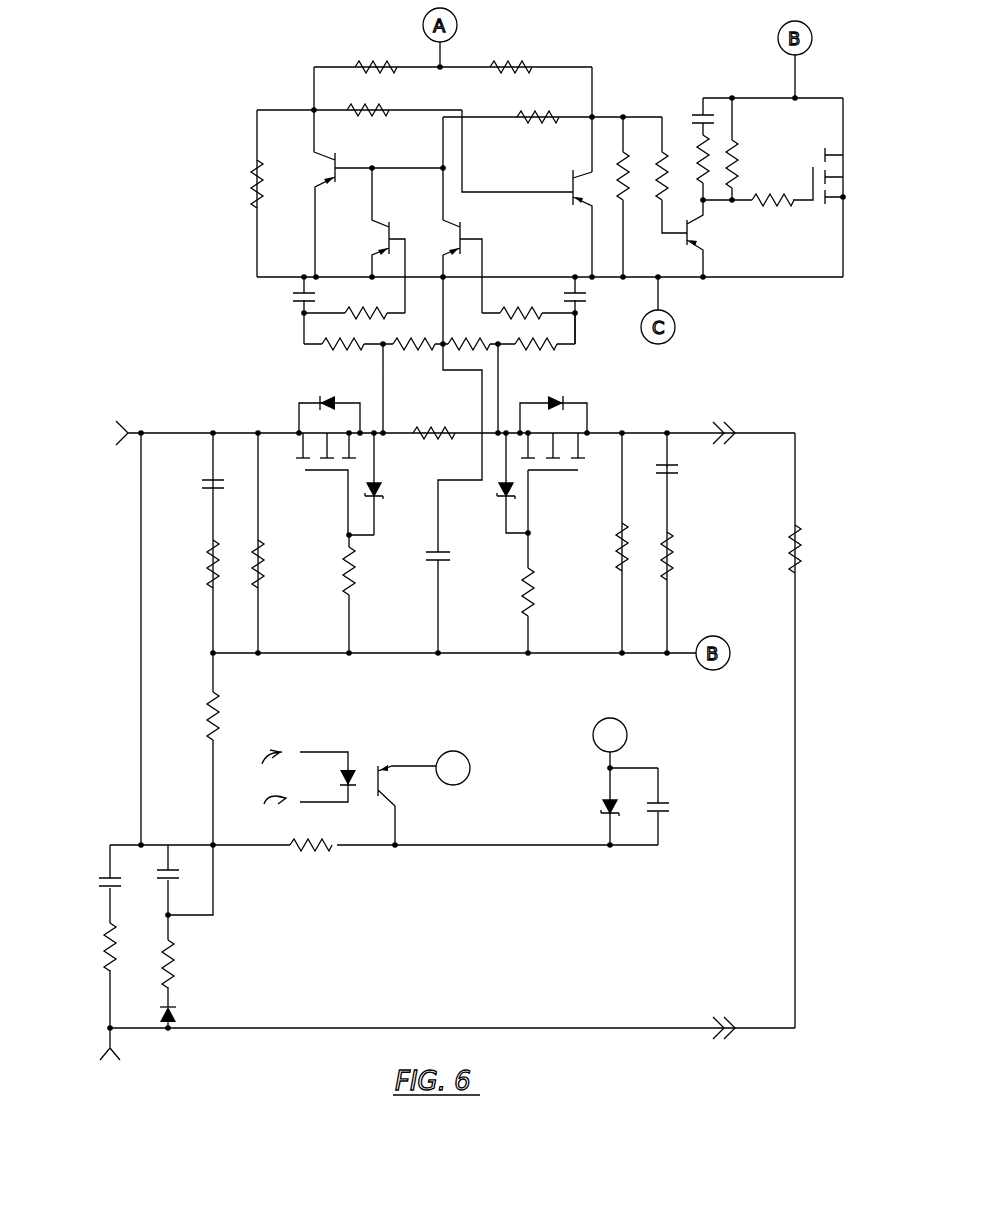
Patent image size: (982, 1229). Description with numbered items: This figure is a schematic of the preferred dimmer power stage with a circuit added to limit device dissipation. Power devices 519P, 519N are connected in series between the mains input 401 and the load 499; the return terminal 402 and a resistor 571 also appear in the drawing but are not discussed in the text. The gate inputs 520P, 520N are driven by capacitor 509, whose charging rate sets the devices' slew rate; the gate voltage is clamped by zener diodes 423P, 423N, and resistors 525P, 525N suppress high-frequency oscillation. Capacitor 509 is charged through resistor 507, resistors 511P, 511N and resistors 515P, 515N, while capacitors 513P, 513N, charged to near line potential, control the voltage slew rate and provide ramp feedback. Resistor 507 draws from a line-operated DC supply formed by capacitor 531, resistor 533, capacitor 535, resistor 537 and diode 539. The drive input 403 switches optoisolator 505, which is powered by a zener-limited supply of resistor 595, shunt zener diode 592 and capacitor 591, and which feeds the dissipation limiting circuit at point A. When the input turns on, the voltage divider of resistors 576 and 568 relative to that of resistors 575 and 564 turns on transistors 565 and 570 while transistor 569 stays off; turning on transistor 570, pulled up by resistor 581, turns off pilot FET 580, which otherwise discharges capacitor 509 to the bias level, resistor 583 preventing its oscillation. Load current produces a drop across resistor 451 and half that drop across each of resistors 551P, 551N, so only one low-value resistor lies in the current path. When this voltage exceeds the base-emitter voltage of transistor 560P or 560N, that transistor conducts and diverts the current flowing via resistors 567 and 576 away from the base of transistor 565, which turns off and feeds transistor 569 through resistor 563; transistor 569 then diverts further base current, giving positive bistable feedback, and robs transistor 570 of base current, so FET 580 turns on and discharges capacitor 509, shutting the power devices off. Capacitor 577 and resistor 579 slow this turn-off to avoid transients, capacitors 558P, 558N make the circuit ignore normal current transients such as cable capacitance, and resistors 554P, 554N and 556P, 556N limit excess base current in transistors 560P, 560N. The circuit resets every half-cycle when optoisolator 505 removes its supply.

The resistor 575 is at (382, 60).
The resistor 576 is at (517, 60).
The resistor 563 is at (384, 104).
The resistor 564 is at (254, 167).
The transistor 565 is at (342, 140).
The resistor 567 is at (533, 112).
The resistor 568 is at (614, 150).
The transistor 569 is at (572, 180).
The resistor 571 is at (660, 164).
The transistor 570 is at (687, 247).
The capacitor 577 is at (693, 108).
The resistor 579 is at (700, 172).
The resistor 581 is at (736, 146).
The resistor 583 is at (772, 204).
The FET 580 is at (812, 166).
The transistor 560P is at (391, 230).
The transistor 560N is at (476, 220).
The capacitor 558P is at (292, 292).
The capacitor 558N is at (593, 313).
The resistor 556P is at (386, 294).
The resistor 556N is at (502, 290).
The resistor 554P is at (358, 352).
The resistor 554N is at (539, 350).
The resistor 551P is at (410, 332).
The resistor 551N is at (496, 336).
The input 401 is at (142, 428).
The capacitor 513P is at (202, 486).
The resistor 515P is at (207, 568).
The resistor 511P is at (260, 566).
The power device 519P is at (292, 418).
The gate input 520P is at (344, 504).
The zener diode 423P is at (390, 486).
The resistor 525P is at (358, 570).
The resistor 451 is at (442, 422).
The capacitor 509 is at (450, 558).
The zener diode 423N is at (486, 514).
The gate input 520N is at (535, 495).
The resistor 525N is at (534, 596).
The power device 519N is at (564, 404).
The resistor 511N is at (616, 547).
The capacitor 513N is at (680, 470).
The resistor 515N is at (678, 552).
The load 499 is at (798, 535).
The resistor 507 is at (204, 722).
The resistor 595 is at (320, 866).
The input 403 is at (268, 777).
The optoisolator 505 is at (379, 761).
The shunt zener diode 592 is at (598, 800).
The capacitor 591 is at (684, 806).
The capacitor 531 is at (104, 866).
The capacitor 535 is at (170, 862).
The resistor 533 is at (130, 958).
The resistor 537 is at (176, 963).
The diode 539 is at (180, 1007).
The neutral terminal 402 is at (134, 1062).